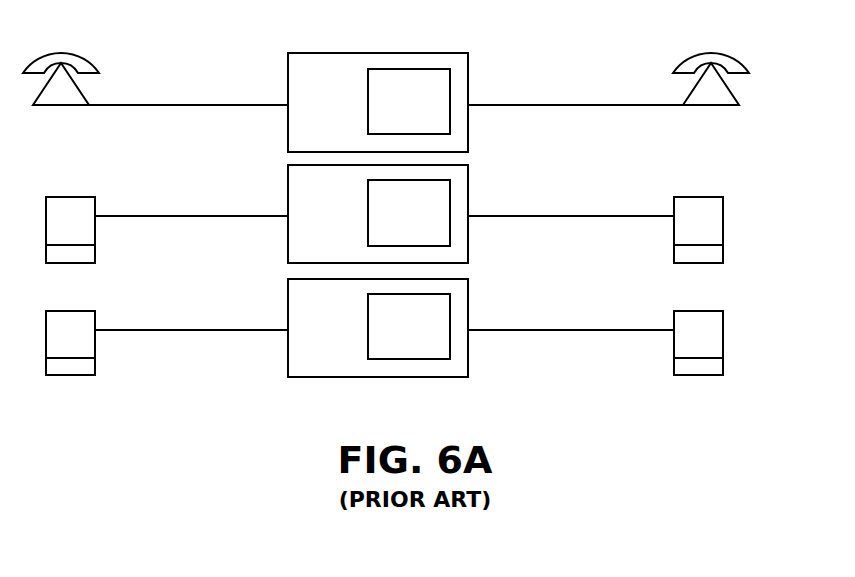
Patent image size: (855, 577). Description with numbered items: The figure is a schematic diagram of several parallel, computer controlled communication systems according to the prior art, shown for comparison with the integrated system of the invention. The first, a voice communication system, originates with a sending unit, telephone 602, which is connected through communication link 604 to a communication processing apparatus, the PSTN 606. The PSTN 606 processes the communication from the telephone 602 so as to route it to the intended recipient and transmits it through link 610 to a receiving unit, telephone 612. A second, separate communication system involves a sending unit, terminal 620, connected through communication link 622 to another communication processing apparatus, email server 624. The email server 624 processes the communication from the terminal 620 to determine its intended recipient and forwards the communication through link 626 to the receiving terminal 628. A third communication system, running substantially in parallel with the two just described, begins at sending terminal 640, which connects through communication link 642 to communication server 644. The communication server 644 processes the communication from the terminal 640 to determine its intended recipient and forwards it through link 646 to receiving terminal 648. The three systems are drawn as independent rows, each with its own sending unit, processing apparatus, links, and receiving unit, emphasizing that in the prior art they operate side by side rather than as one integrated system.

The telephone 602 is at (51, 53).
The communication link 604 is at (208, 105).
The PSTN 606 is at (420, 53).
The link 610 is at (533, 105).
The telephone 612 is at (705, 53).
The terminal 620 is at (96, 197).
The communication link 622 is at (208, 216).
The email server 624 is at (468, 187).
The link 626 is at (574, 216).
The receiving terminal 628 is at (693, 197).
The sending terminal 640 is at (93, 309).
The communication link 642 is at (208, 330).
The communication server 644 is at (468, 296).
The link 646 is at (574, 330).
The receiving terminal 648 is at (742, 300).